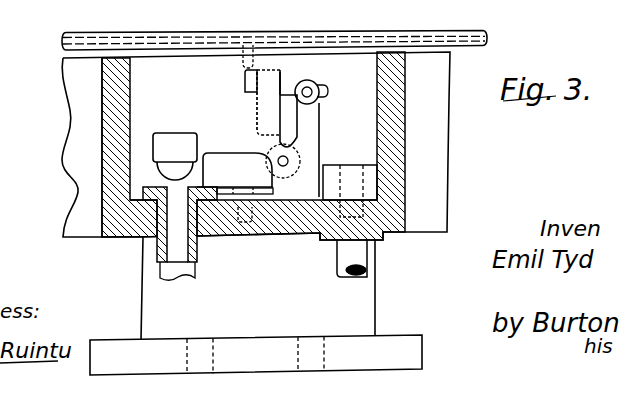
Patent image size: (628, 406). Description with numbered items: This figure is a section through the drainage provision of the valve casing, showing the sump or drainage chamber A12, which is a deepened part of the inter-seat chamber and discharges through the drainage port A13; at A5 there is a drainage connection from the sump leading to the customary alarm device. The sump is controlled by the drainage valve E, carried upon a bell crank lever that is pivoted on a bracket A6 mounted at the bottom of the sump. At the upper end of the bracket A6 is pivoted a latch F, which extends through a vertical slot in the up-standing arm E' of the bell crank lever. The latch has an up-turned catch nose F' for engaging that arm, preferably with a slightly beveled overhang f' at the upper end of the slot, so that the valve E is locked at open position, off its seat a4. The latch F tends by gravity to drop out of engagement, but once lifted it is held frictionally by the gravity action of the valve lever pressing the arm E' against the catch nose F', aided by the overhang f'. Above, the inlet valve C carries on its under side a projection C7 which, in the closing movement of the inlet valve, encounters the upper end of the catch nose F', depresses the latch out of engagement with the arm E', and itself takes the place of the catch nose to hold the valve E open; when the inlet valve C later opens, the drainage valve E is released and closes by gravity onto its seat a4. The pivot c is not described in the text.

The inlet valve C is at (133, 26).
The projection C7 is at (247, 55).
The beveled overhang f' is at (230, 77).
The catch nose F' is at (265, 108).
The latch F is at (292, 75).
The drainage valve E is at (175, 136).
The up-standing arm of bell crank lever E' is at (238, 101).
The bracket A6 is at (310, 130).
The cam c is at (288, 160).
The valve seat a4 is at (190, 183).
The drainage port A13 is at (178, 203).
The drainage connection A5 is at (337, 260).
The sump or drainage chamber A12 is at (140, 170).